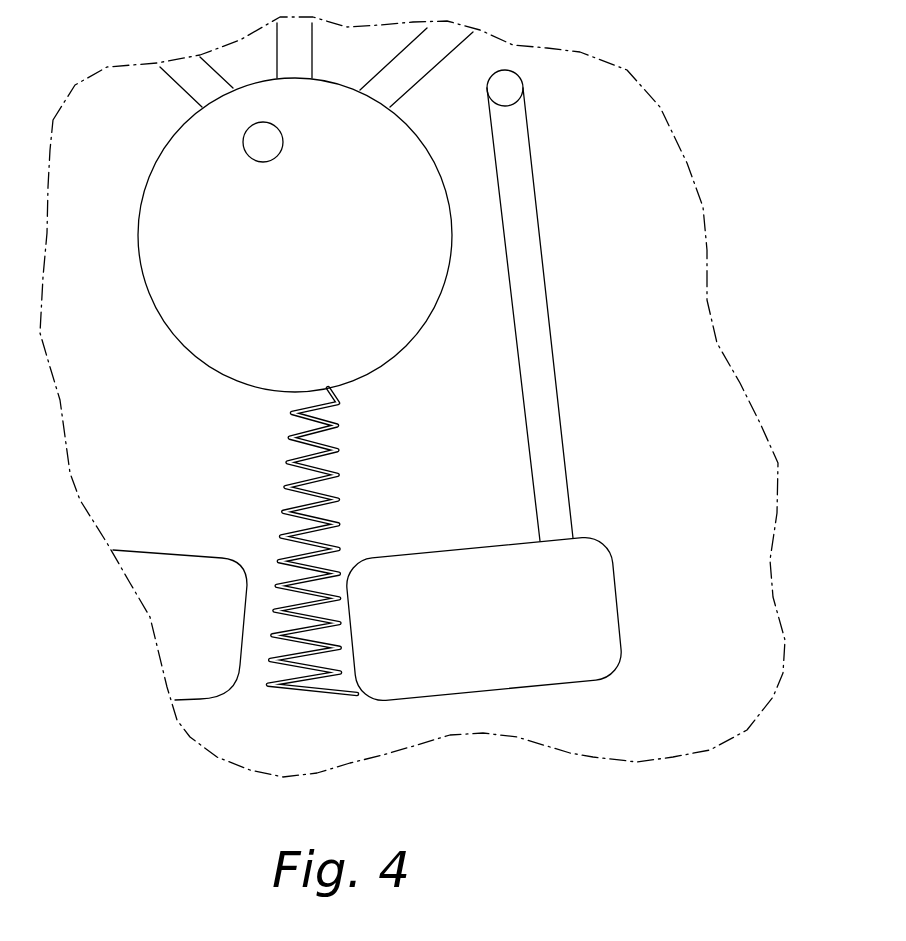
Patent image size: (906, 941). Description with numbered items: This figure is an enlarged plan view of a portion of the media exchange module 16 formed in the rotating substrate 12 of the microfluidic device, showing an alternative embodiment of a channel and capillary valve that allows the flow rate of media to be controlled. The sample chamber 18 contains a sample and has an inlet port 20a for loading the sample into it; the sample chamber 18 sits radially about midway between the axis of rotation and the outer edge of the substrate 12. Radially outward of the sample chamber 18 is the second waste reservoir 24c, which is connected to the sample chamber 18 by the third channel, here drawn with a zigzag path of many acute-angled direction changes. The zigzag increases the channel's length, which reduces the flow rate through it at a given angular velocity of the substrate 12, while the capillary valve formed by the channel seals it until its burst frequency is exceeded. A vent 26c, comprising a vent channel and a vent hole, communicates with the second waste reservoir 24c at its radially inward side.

The substrate 12 is at (643, 137).
The media exchange module 16 is at (596, 218).
The sample chamber 18 is at (192, 348).
The inlet port 20a is at (243, 142).
The second waste reservoir 24c is at (617, 600).
The vent 26c is at (560, 405).